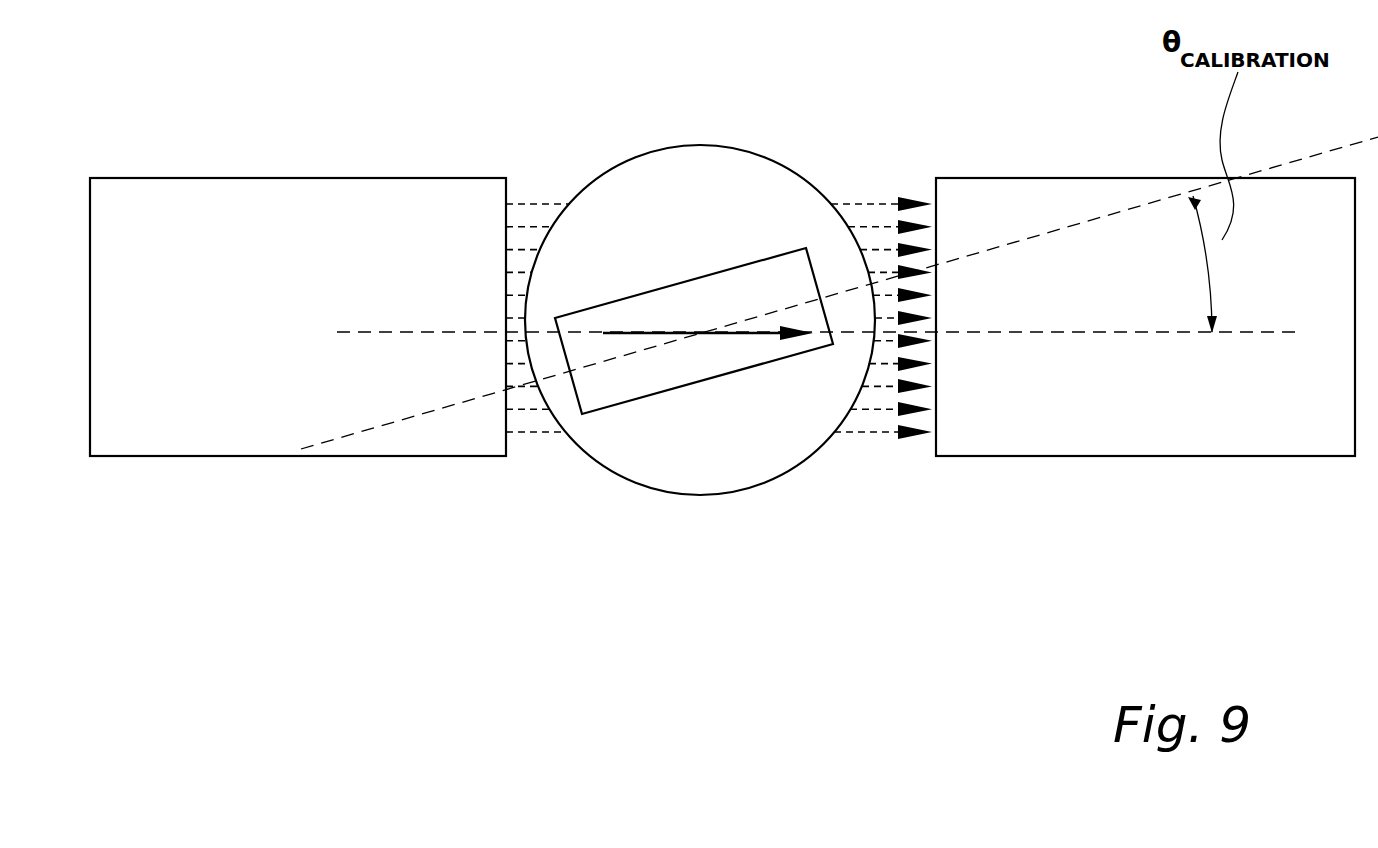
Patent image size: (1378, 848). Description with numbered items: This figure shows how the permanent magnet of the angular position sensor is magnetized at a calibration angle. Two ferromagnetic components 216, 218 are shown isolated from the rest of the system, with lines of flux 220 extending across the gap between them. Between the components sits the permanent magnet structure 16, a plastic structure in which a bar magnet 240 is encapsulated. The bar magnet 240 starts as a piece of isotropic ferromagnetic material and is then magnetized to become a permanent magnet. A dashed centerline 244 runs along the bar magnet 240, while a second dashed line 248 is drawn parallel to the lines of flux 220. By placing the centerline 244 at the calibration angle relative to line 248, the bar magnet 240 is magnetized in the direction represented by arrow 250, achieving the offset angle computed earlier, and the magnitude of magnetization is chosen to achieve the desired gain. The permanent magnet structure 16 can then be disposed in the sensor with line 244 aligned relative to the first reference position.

The ferromagnetic component 216 is at (232, 188).
The ferromagnetic component 218 is at (1000, 192).
The lines of flux 220 is at (527, 212).
The permanent magnet structure 16 is at (735, 477).
The bar magnet 240 is at (708, 288).
The arrow 250 is at (615, 325).
The centerline 244 is at (354, 427).
The line parallel to the lines of flux 248 is at (1072, 340).